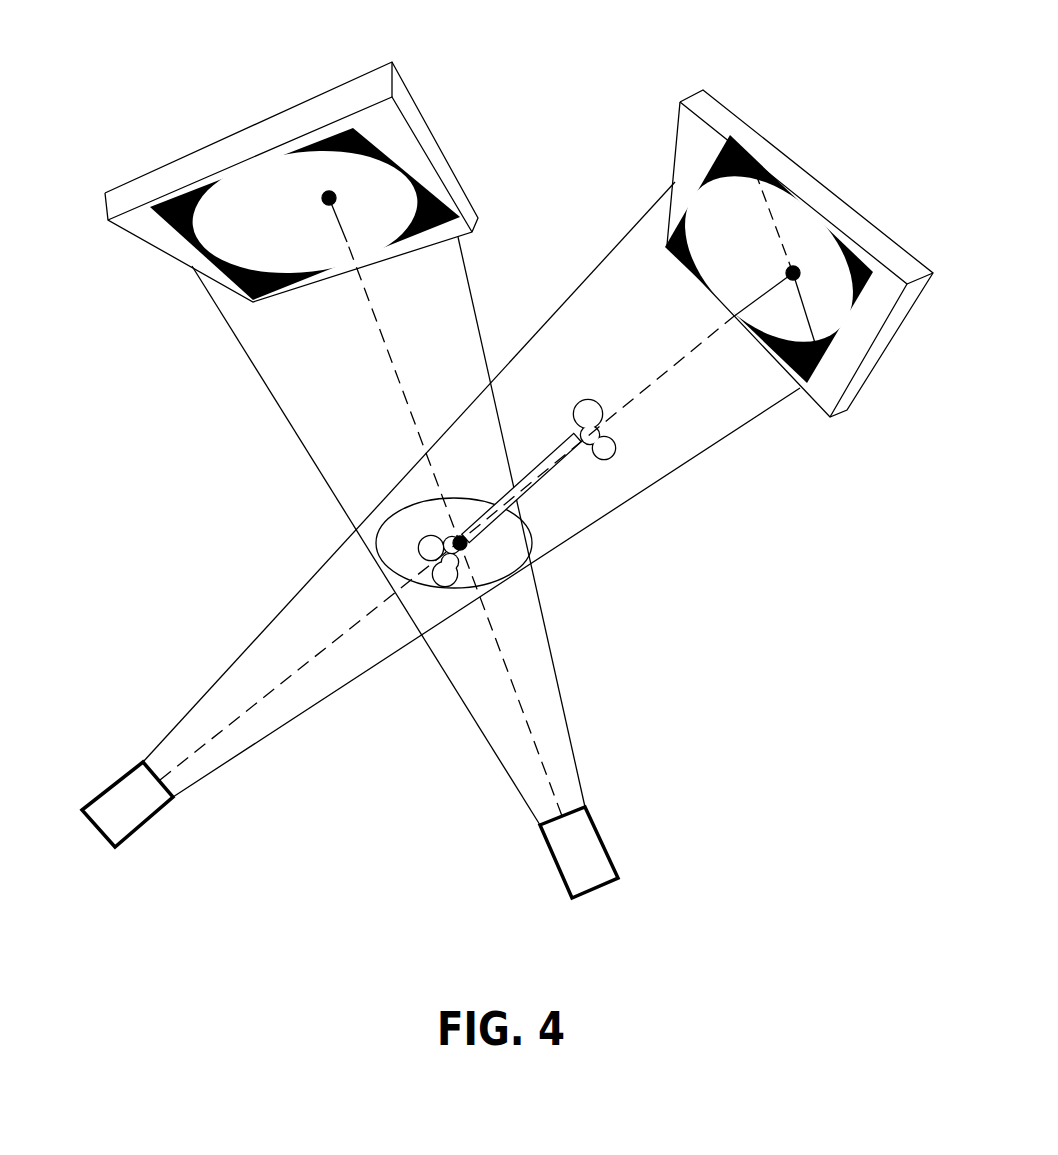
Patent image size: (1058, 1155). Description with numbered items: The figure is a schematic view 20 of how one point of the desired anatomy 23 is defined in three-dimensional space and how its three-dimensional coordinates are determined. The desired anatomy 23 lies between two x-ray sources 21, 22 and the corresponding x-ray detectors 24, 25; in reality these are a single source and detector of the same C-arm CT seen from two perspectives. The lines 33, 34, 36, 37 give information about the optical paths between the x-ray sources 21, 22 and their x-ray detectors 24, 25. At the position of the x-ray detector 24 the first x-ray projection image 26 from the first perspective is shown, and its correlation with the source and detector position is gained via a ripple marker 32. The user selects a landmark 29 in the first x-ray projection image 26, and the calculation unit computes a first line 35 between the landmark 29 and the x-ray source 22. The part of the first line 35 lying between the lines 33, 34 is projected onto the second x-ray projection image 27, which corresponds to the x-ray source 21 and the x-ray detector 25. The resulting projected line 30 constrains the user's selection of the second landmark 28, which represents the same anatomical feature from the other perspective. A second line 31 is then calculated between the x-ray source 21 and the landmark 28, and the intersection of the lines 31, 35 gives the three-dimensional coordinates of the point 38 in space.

The schematic view 20 is at (183, 446).
The x-ray source 21 is at (130, 838).
The x-ray source 22 is at (607, 833).
The desired anatomy 23 is at (552, 486).
The x-ray detector 24 is at (303, 197).
The x-ray detector 25 is at (793, 279).
The first x-ray projection image 26 is at (242, 243).
The second x-ray projection image 27 is at (788, 327).
The second landmark 28 is at (800, 278).
The first landmark 29 is at (338, 183).
The projected line 30 is at (783, 207).
The second line 31 is at (297, 671).
The ripple marker 32 is at (442, 592).
The optic path 33 is at (268, 748).
The optic path 34 is at (177, 707).
The first line 35 is at (503, 633).
The optic path 36 is at (500, 782).
The optic path 37 is at (573, 738).
The point 38 is at (446, 538).